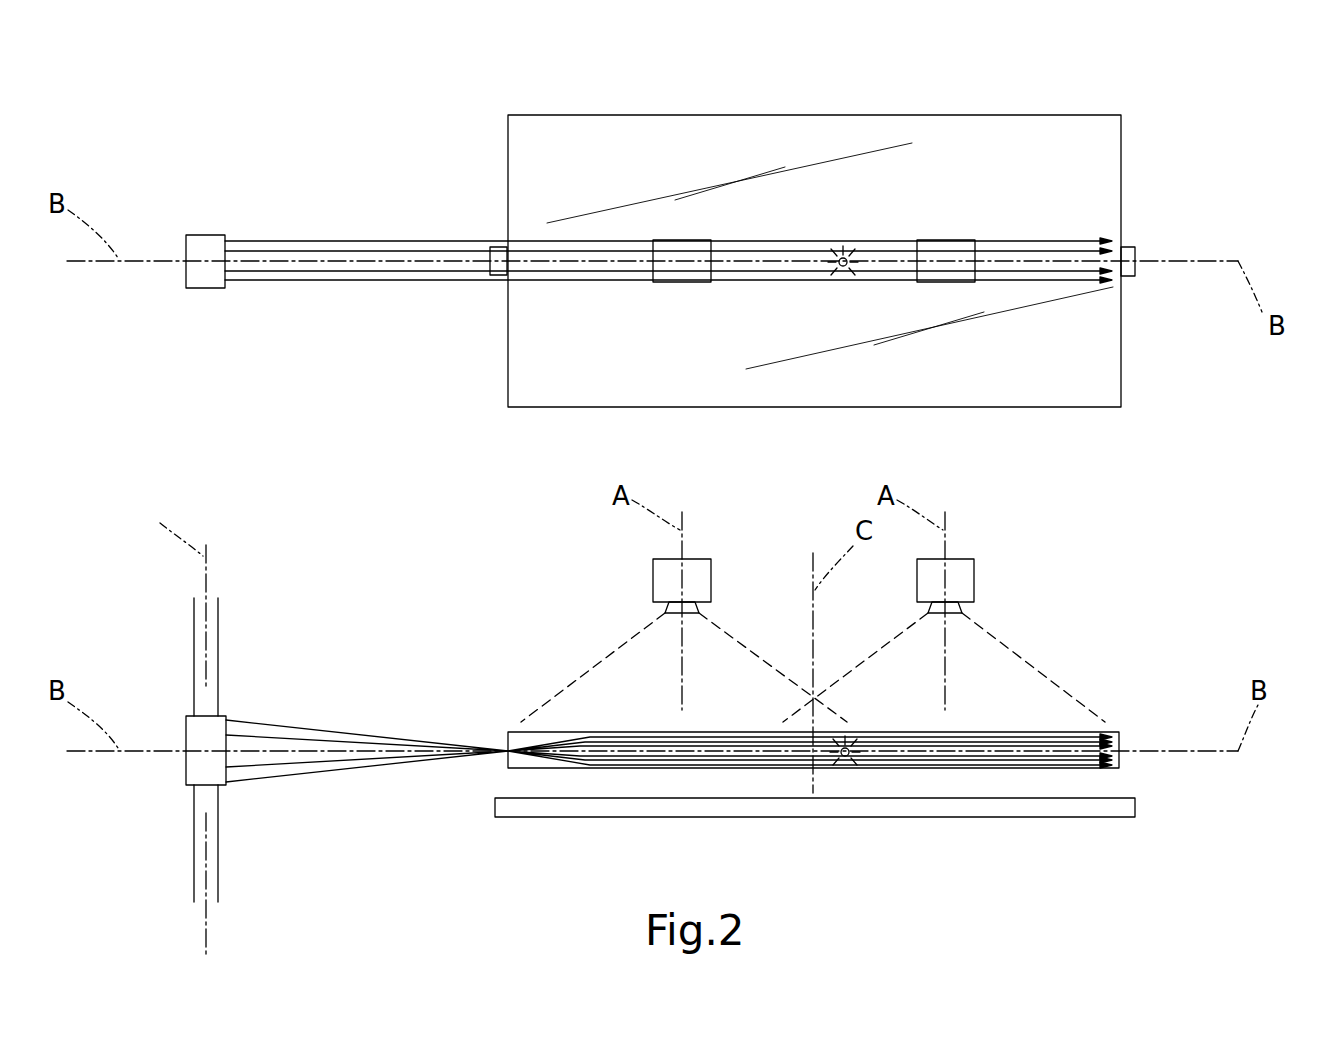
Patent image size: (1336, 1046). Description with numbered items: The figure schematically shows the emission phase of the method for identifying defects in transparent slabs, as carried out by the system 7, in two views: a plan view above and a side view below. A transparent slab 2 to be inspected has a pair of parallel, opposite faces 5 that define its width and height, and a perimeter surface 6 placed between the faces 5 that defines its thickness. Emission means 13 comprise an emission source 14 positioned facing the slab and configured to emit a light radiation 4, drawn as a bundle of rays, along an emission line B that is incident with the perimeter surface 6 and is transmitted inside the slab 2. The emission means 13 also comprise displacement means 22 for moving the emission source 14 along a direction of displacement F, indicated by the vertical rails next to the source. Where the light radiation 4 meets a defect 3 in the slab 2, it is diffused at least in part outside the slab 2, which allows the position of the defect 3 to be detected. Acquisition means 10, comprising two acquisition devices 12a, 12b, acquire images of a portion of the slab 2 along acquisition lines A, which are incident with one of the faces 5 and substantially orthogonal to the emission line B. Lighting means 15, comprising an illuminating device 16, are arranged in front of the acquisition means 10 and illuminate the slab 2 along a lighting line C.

The transparent slab 2 is at (486, 397).
The defect 3 is at (845, 268).
The light radiation 4 is at (350, 257).
The faces 5 is at (1047, 357).
The perimeter surface 6 is at (507, 745).
The system 7 is at (437, 103).
The acquisition means 10 is at (668, 206).
The acquisition device 12a is at (965, 256).
The acquisition device 12b is at (705, 256).
The emission means 13 is at (167, 297).
The emission source 14 is at (205, 246).
The lighting means 15 is at (514, 836).
The illuminating device 16 is at (1128, 258).
The displacement means 22 is at (175, 636).